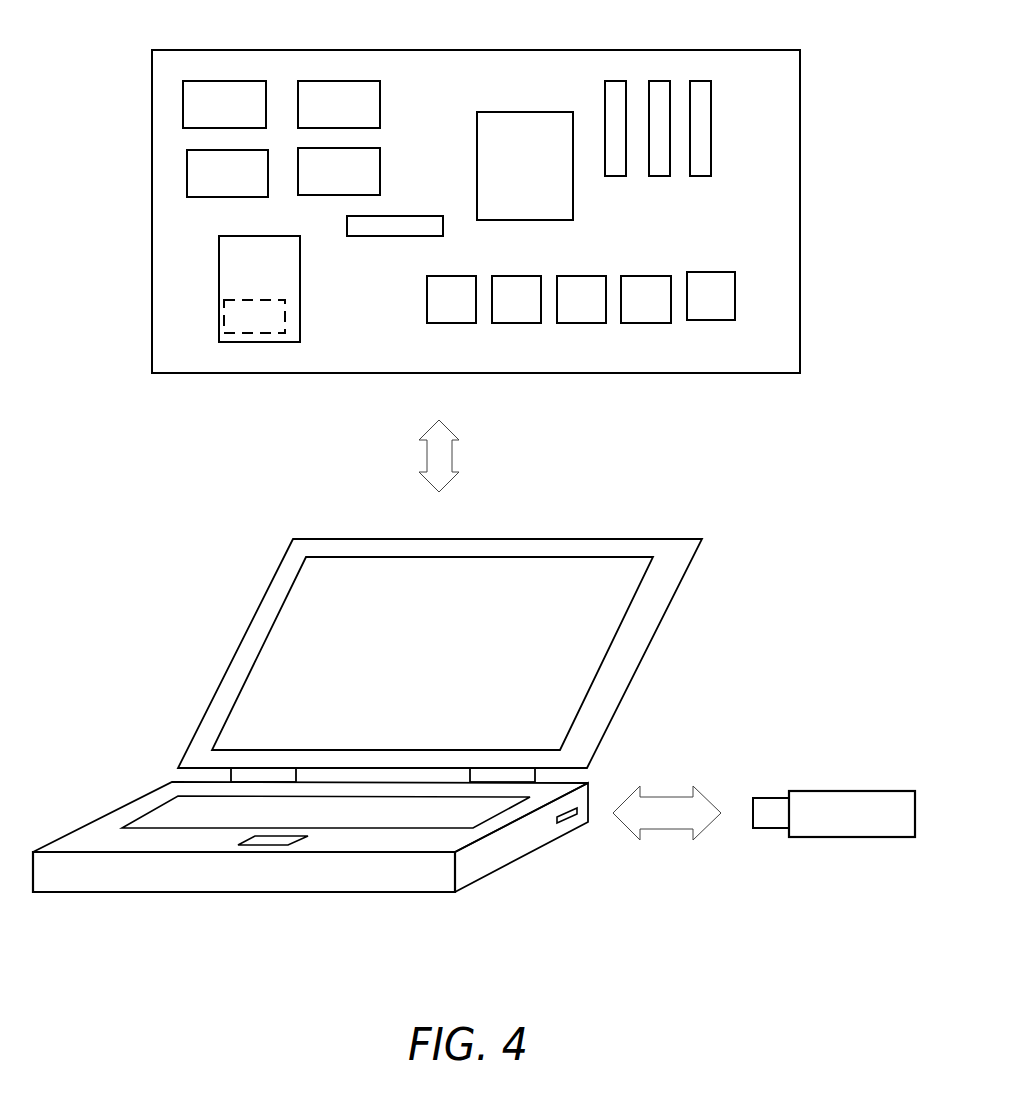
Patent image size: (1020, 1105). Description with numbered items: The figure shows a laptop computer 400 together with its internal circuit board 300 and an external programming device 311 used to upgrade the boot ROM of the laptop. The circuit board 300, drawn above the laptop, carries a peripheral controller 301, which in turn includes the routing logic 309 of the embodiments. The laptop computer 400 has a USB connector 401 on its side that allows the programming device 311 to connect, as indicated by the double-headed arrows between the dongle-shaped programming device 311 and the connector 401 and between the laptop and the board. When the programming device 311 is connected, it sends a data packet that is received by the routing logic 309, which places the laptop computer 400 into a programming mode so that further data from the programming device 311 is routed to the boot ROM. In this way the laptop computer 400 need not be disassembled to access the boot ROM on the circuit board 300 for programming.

The circuit board 300 is at (748, 50).
The peripheral controller 301 is at (300, 286).
The routing logic 309 is at (254, 316).
The laptop computer 400 is at (657, 541).
The USB connector 401 is at (582, 806).
The programming device 311 is at (824, 791).